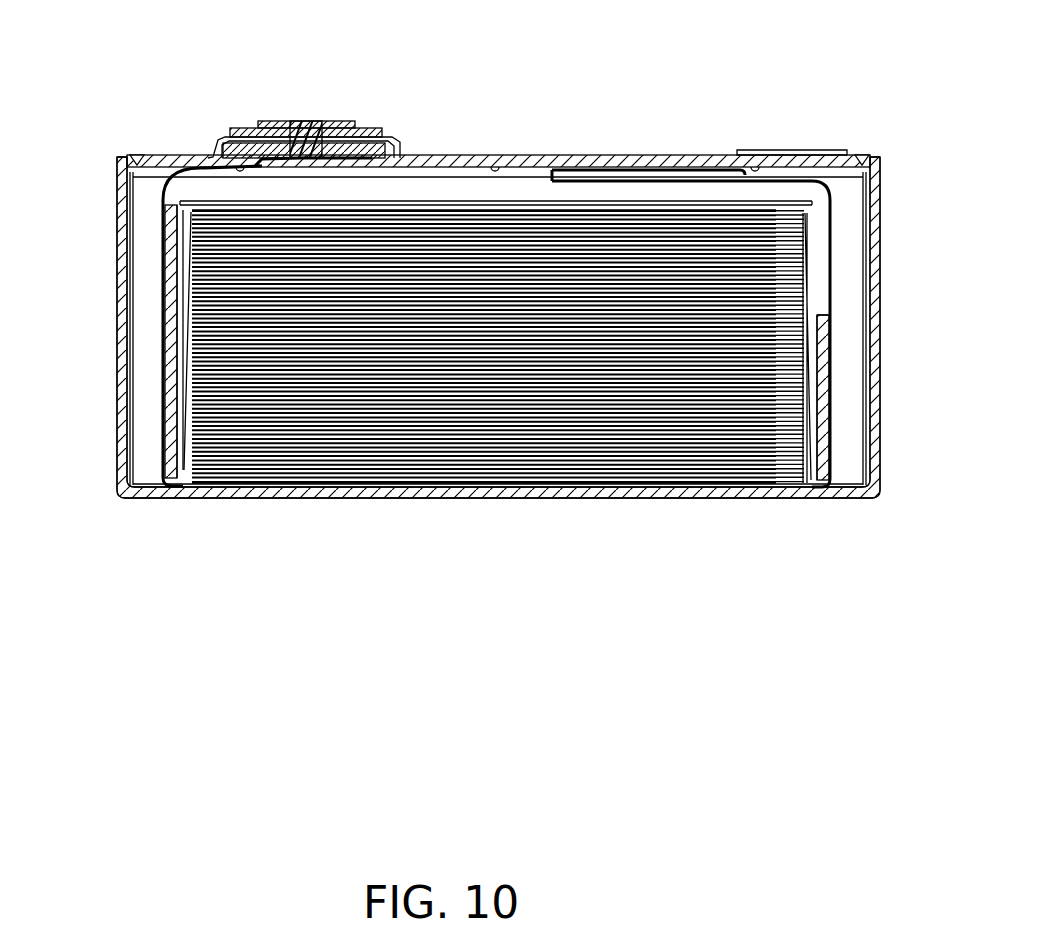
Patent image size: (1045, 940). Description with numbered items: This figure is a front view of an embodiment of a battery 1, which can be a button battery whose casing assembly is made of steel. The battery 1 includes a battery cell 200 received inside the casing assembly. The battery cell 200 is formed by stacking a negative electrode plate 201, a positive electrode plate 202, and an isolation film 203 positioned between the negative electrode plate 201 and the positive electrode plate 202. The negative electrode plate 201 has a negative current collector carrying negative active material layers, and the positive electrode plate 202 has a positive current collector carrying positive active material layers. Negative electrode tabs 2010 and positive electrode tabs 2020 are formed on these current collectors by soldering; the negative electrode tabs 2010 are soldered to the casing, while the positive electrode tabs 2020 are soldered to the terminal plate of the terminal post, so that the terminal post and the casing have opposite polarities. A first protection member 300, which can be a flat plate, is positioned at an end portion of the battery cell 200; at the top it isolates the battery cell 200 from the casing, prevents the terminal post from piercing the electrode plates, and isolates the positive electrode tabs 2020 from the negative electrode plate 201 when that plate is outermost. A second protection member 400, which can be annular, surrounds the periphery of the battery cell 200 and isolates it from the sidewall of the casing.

The battery 1 is at (524, 38).
The battery cell 200 is at (527, 460).
The negative electrode plate 201 is at (808, 214).
The positive electrode plate 202 is at (795, 270).
The isolation film 203 is at (800, 237).
The first protection member 300 is at (472, 207).
The second protection member 400 is at (132, 447).
The negative electrode tabs 2010 is at (828, 410).
The positive electrode tabs 2020 is at (160, 390).